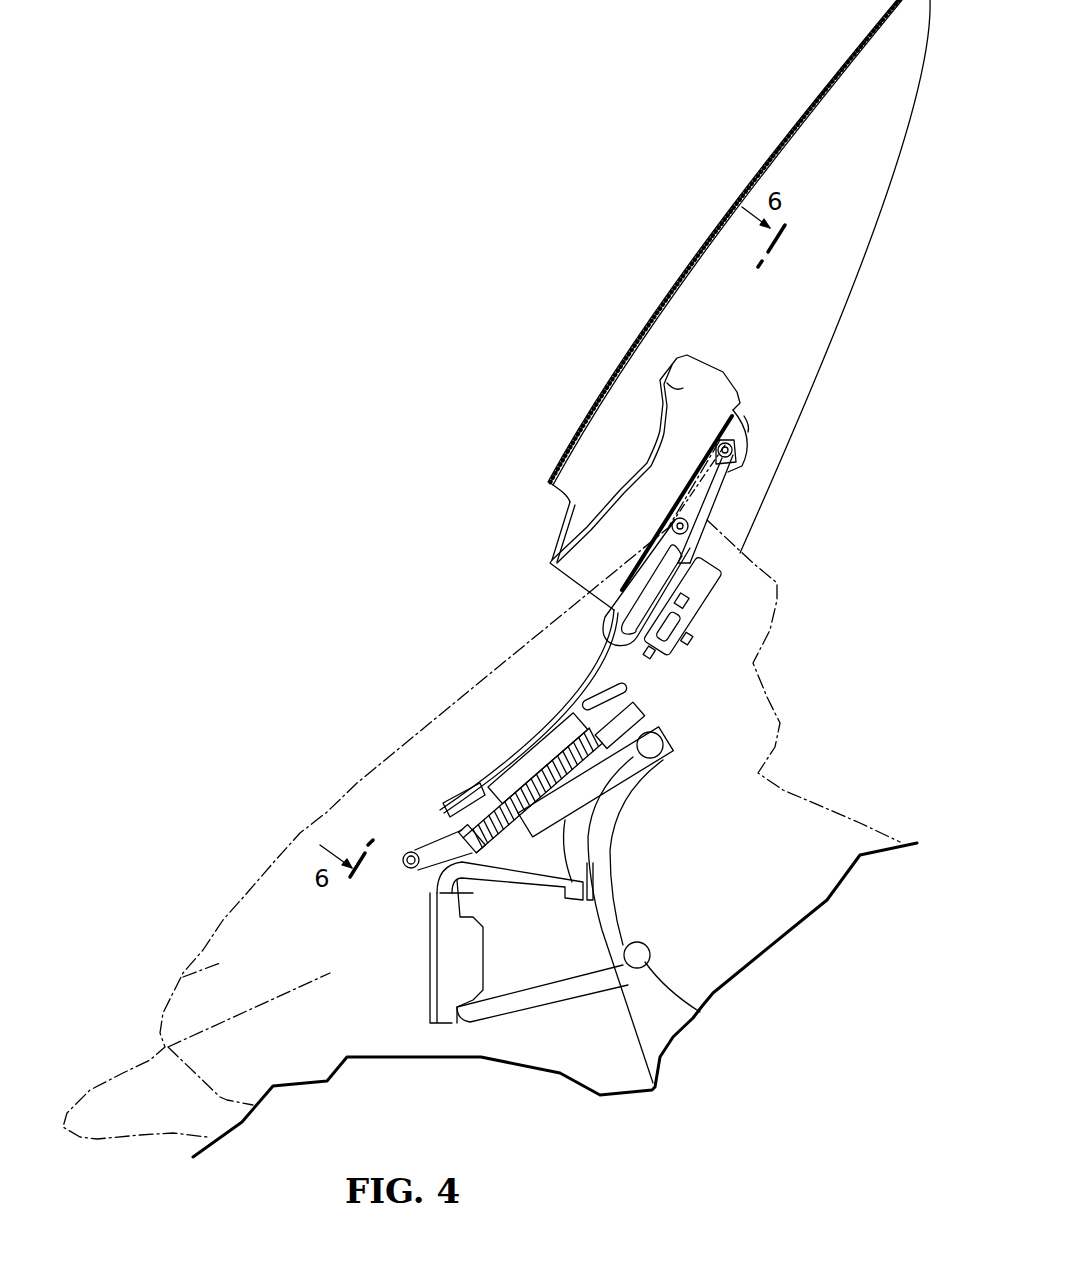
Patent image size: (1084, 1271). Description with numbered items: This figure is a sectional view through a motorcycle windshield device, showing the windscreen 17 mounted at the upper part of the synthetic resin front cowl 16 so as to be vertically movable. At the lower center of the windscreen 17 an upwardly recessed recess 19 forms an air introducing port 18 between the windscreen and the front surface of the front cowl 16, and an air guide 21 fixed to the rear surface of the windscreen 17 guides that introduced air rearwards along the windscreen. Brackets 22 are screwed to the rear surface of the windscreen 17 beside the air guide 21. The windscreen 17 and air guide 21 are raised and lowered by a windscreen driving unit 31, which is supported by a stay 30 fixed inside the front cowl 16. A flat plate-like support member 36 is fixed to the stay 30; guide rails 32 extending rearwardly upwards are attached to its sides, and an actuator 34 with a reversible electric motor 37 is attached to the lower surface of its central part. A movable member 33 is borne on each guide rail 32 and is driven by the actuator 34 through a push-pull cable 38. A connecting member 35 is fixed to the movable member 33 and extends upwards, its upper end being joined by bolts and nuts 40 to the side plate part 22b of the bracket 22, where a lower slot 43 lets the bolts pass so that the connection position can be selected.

The front cowl 16 is at (399, 746).
The windscreen 17 is at (676, 293).
The air introducing port 18 is at (554, 514).
The recess 19 is at (561, 498).
The air guide 21 is at (623, 480).
The bracket 22 is at (752, 422).
The side plate part 22b is at (730, 441).
The stay 30 is at (612, 912).
The windscreen driving unit 31 is at (432, 803).
The guide rail 32 is at (557, 697).
The movable member 33 is at (650, 655).
The actuator 34 is at (563, 823).
The connecting member 35 is at (702, 519).
The support member 36 is at (406, 868).
The electric motor 37 is at (527, 823).
The push-pull cable 38 is at (473, 811).
The nut 40 is at (728, 462).
The slot 43 is at (616, 610).